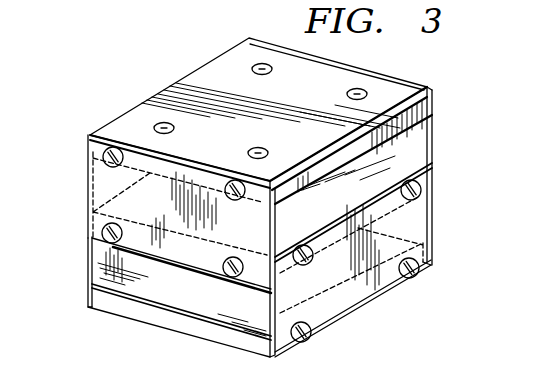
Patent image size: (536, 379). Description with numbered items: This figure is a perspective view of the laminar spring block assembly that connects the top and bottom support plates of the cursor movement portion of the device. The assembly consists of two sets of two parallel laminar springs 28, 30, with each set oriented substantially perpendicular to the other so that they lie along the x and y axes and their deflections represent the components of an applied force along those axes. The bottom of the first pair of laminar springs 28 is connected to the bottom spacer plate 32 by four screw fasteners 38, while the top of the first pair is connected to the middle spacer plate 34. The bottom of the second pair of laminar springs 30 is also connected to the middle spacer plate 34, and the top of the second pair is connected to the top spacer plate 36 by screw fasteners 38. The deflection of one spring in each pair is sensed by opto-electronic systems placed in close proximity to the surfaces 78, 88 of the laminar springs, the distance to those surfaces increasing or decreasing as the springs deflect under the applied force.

The first pair of laminar springs 28 is at (100, 260).
The second pair of laminar springs 30 is at (96, 182).
The bottom spacer plate 32 is at (197, 330).
The middle spacer plate 34 is at (296, 222).
The top spacer plate 36 is at (213, 78).
The screw fasteners 38 is at (111, 148).
The surface of laminar spring 78 is at (431, 128).
The surface of laminar spring 88 is at (87, 252).